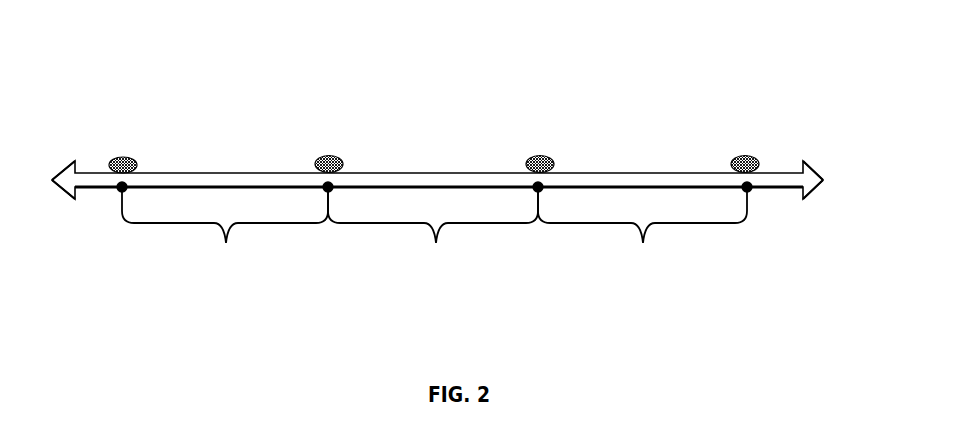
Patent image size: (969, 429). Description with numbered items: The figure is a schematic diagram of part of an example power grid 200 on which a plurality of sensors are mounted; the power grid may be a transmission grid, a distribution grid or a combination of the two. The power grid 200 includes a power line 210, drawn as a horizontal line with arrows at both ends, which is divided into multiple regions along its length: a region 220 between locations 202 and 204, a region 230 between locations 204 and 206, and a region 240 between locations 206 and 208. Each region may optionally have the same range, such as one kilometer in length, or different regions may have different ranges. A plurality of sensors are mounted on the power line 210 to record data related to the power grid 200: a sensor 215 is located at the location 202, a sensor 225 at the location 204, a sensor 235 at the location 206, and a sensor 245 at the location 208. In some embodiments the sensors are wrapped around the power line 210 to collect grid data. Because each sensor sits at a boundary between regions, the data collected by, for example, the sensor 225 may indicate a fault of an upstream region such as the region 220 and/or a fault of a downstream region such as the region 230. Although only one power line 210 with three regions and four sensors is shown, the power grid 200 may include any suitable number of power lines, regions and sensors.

The power grid 200 is at (148, 72).
The power line 210 is at (790, 170).
The sensor 215 is at (125, 157).
The sensor 225 is at (331, 156).
The sensor 235 is at (542, 156).
The sensor 245 is at (747, 156).
The location 202 is at (121, 187).
The location 204 is at (327, 187).
The location 206 is at (537, 187).
The location 208 is at (746, 187).
The region 220 is at (225, 227).
The region 230 is at (433, 228).
The region 240 is at (642, 228).